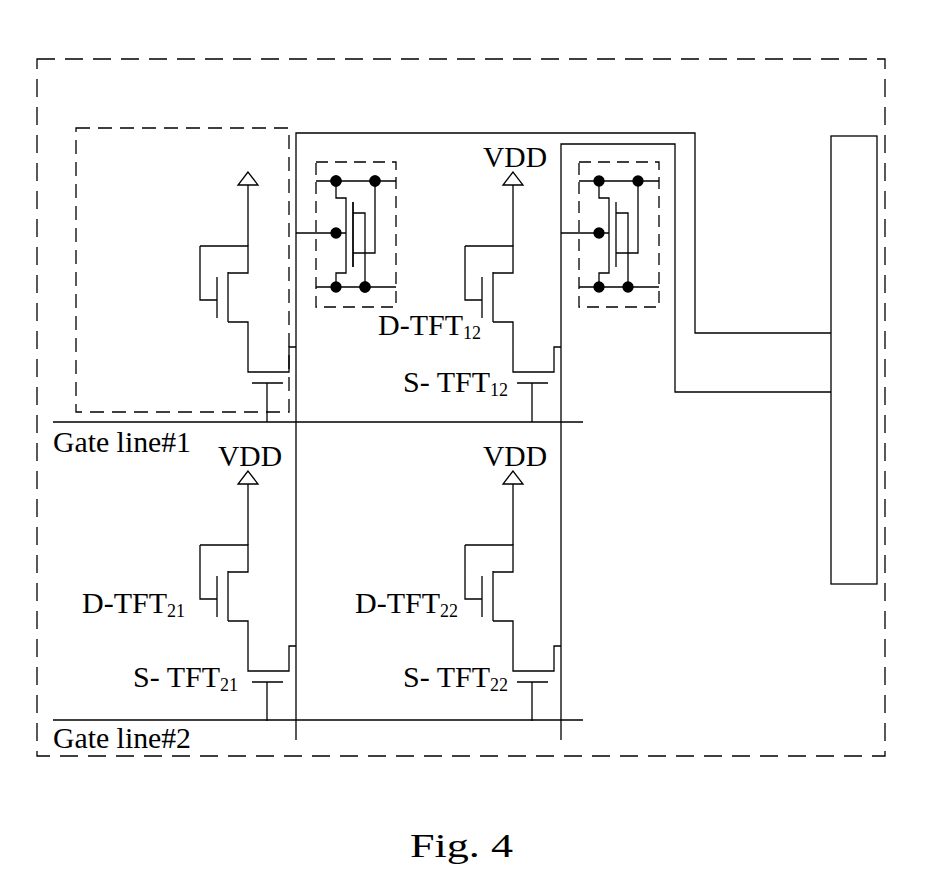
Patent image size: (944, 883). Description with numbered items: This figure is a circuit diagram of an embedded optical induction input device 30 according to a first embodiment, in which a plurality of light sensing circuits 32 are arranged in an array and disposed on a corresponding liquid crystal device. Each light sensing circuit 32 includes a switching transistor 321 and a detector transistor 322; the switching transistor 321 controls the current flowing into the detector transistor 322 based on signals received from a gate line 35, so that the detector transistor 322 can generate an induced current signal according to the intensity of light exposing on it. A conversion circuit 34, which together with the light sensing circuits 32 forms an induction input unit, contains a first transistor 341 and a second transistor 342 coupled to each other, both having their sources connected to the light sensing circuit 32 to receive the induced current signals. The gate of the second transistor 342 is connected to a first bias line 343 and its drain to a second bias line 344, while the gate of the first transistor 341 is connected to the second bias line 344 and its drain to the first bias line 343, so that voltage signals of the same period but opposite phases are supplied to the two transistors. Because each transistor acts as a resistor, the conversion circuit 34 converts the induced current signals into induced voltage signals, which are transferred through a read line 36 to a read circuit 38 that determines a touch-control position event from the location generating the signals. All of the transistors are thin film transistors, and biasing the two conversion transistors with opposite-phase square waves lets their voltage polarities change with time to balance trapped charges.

The embedded optical induction input device 30 is at (220, 757).
The light sensing circuit 32 is at (181, 128).
The switching transistor 321 is at (282, 372).
The detector transistor 322 is at (201, 247).
The conversion circuit 34 is at (397, 211).
The first transistor 341 is at (340, 181).
The second transistor 342 is at (348, 282).
The first bias line 343 is at (384, 182).
The second bias line 344 is at (384, 287).
The gate line 35 is at (580, 421).
The read line 36 is at (695, 207).
The read circuit 38 is at (857, 585).